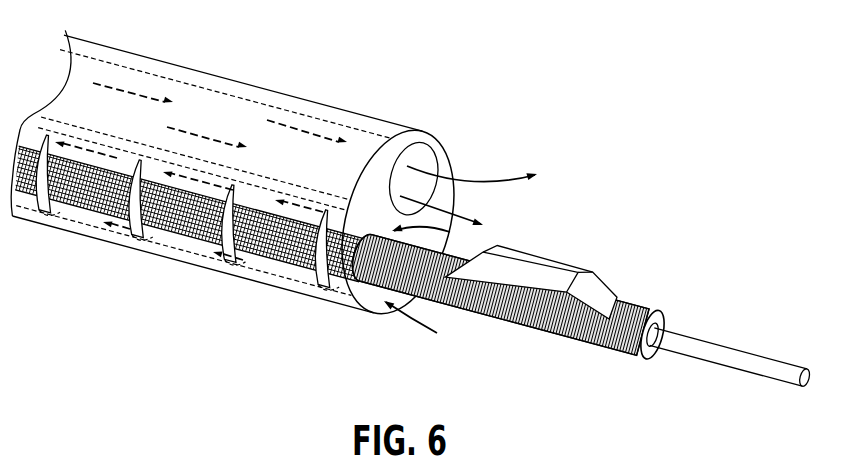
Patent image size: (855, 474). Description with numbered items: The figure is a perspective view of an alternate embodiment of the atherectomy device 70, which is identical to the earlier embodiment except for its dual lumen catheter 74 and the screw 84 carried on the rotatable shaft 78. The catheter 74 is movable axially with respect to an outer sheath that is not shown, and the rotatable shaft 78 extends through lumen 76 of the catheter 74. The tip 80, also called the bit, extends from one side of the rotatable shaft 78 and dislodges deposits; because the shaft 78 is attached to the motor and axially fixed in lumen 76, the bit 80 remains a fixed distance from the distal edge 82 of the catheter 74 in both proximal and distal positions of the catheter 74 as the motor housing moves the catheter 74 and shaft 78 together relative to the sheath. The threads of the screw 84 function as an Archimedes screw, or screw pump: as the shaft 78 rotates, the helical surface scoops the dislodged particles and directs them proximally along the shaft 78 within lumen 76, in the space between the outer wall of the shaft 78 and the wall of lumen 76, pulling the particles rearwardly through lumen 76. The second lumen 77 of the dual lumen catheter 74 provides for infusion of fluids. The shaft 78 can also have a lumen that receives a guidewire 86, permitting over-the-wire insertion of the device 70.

The atherectomy device 70 is at (153, 283).
The dual lumen catheter 74 is at (315, 103).
The lumen 76 is at (381, 305).
The lumen 77 is at (424, 161).
The rotatable shaft 78 is at (532, 327).
The tip 80 is at (553, 260).
The distal edge 82 is at (420, 132).
The screw 84 is at (236, 253).
The guidewire 86 is at (722, 342).